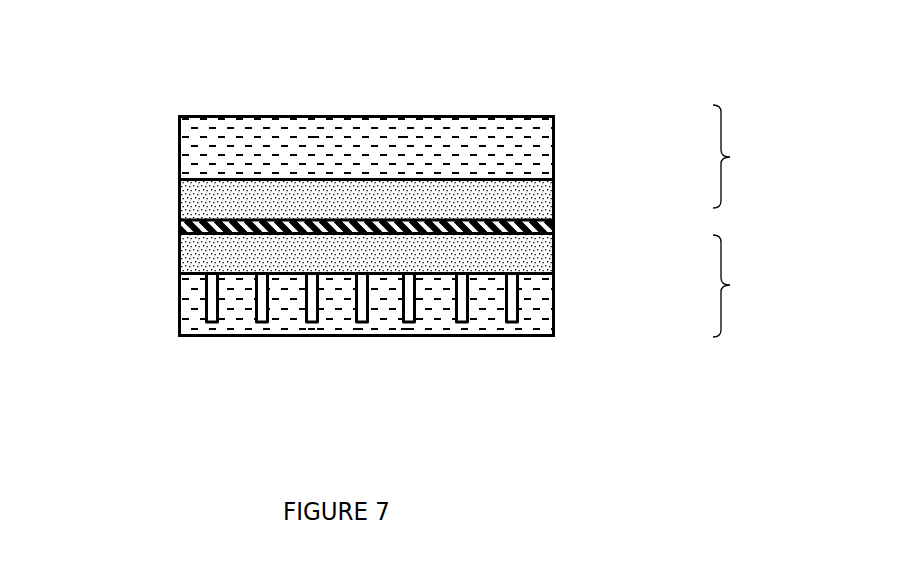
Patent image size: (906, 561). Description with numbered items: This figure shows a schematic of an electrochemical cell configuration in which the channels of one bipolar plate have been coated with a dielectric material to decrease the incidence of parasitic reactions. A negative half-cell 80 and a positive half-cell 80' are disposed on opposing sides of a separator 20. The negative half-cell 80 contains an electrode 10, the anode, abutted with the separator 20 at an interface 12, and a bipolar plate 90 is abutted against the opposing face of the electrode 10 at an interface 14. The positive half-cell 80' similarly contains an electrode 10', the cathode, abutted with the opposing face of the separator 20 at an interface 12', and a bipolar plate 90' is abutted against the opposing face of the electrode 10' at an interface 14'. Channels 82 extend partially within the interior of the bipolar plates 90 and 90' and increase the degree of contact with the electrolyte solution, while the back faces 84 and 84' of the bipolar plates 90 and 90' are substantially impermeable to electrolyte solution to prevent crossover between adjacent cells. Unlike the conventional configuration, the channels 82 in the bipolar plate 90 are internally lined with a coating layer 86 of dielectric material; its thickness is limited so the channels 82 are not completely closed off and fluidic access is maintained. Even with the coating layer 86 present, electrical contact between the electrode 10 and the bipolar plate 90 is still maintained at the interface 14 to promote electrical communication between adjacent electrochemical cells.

The bipolar plate 90' is at (439, 128).
The electrode 10' is at (438, 179).
The separator 20 is at (555, 228).
The electrode 10 is at (437, 242).
The bipolar plate 90 is at (437, 301).
The coating layer 86 is at (513, 308).
The back face 84' is at (363, 78).
The back face 84 is at (380, 377).
The interface 14' is at (308, 162).
The interface 12' is at (308, 204).
The interface 12 is at (315, 252).
The interface 14 is at (316, 296).
The channels 82 is at (318, 133).
The positive half-cell 80' is at (748, 156).
The negative half-cell 80 is at (748, 286).